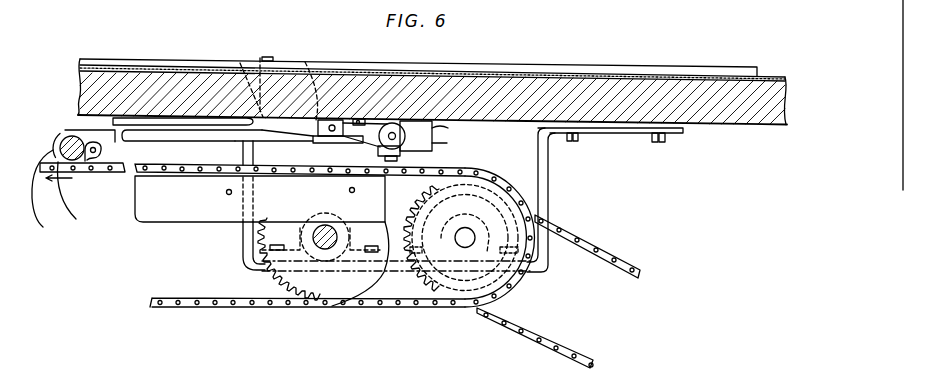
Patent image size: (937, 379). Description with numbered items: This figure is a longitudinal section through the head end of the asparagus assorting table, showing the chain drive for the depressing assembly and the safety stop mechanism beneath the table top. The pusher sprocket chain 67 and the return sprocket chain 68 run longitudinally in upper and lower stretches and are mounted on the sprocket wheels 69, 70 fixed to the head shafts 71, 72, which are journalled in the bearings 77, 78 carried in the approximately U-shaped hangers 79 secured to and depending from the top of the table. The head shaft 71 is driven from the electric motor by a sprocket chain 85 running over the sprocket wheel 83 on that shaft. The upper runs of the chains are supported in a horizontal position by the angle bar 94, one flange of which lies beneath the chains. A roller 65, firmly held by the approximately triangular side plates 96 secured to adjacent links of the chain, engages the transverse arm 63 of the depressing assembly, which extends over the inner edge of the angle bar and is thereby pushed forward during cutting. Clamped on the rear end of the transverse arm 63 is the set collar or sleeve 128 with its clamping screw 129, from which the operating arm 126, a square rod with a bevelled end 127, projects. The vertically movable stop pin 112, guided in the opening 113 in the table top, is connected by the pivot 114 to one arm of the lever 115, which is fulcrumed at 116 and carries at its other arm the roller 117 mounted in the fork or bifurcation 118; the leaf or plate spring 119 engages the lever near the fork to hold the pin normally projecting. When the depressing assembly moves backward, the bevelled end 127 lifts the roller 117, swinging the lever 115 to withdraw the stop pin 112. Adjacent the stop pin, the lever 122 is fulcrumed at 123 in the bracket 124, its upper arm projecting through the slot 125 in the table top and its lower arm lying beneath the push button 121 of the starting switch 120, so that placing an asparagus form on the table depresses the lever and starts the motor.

The transverse arm 63 is at (59, 138).
The roller 65 is at (103, 157).
The triangular side plates 96 is at (96, 160).
The set collar or sleeve 128 is at (82, 216).
The clamping screw 129 is at (43, 226).
The pivot 114 is at (258, 128).
The operating arm 126 is at (181, 140).
The opening 113 is at (239, 62).
The stop pin 112 is at (267, 57).
The lever 115 is at (299, 137).
The bevelled end 127 is at (312, 108).
The bracket 124 is at (318, 150).
The slot 125 is at (312, 108).
The angle bar 94 is at (161, 210).
The leaf or plate spring 119 is at (358, 119).
The fulcrum 116 is at (342, 137).
The fork or bifurcation 118 is at (385, 134).
The push button 121 is at (400, 142).
The fulcrum 123 is at (378, 150).
The roller 117 is at (432, 134).
The starting switch 120 is at (422, 123).
The lever 122 is at (338, 139).
The U-shaped hangers 79 is at (549, 178).
The sprocket wheel 83 is at (483, 179).
The head shaft 72 is at (325, 224).
The sprocket wheel 70 is at (320, 284).
The bearing 78 is at (296, 246).
The return sprocket chain 68 is at (374, 290).
The head shaft 71 is at (466, 237).
The bearing 77 is at (452, 212).
The sprocket chain 85 is at (592, 246).
The sprocket wheel 69 is at (421, 292).
The pusher sprocket chain 67 is at (168, 306).